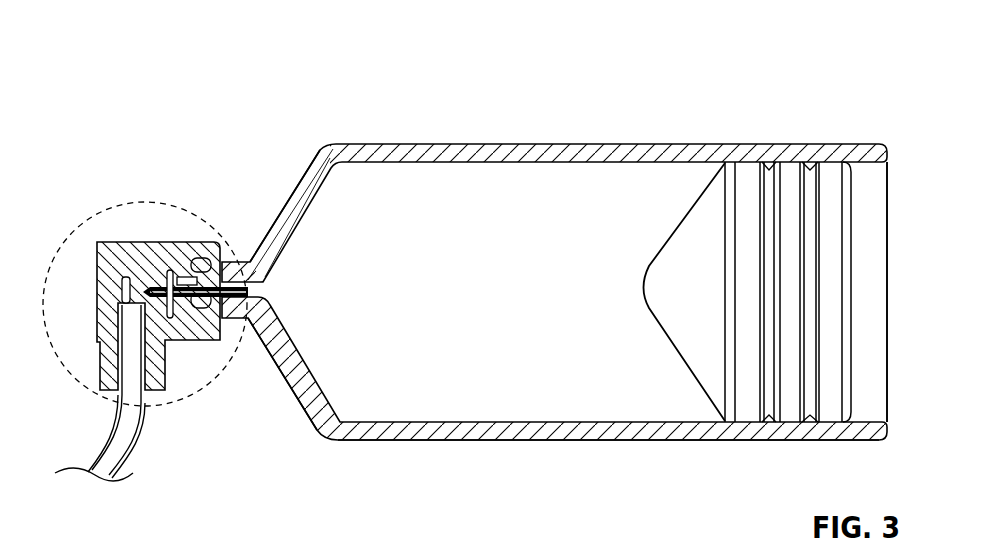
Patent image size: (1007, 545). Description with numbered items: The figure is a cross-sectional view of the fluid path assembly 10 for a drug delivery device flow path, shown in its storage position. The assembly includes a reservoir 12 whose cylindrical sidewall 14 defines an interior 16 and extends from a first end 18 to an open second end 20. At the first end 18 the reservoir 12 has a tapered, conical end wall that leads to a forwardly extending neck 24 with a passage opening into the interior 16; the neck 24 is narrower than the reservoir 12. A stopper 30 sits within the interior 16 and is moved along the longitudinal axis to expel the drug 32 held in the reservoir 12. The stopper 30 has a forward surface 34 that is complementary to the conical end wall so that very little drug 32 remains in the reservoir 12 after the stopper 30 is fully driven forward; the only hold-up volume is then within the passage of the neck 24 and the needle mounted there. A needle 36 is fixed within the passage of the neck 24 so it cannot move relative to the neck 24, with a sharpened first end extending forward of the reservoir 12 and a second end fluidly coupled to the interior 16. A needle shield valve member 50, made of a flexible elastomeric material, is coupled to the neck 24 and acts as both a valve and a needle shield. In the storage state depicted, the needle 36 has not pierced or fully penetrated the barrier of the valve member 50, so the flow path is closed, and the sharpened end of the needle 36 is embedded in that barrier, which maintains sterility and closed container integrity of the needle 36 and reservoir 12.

The fluid path assembly 10 is at (122, 52).
The reservoir 12 is at (628, 152).
The cylindrical sidewall 14 is at (566, 433).
The interior 16 is at (548, 226).
The first end 18 is at (303, 169).
The open second end 20 is at (908, 176).
The neck 24 is at (232, 263).
The stopper 30 is at (787, 170).
The drug 32 is at (596, 304).
The forward surface 34 is at (711, 181).
The needle 36 is at (266, 327).
The needle shield valve member 50 is at (143, 263).